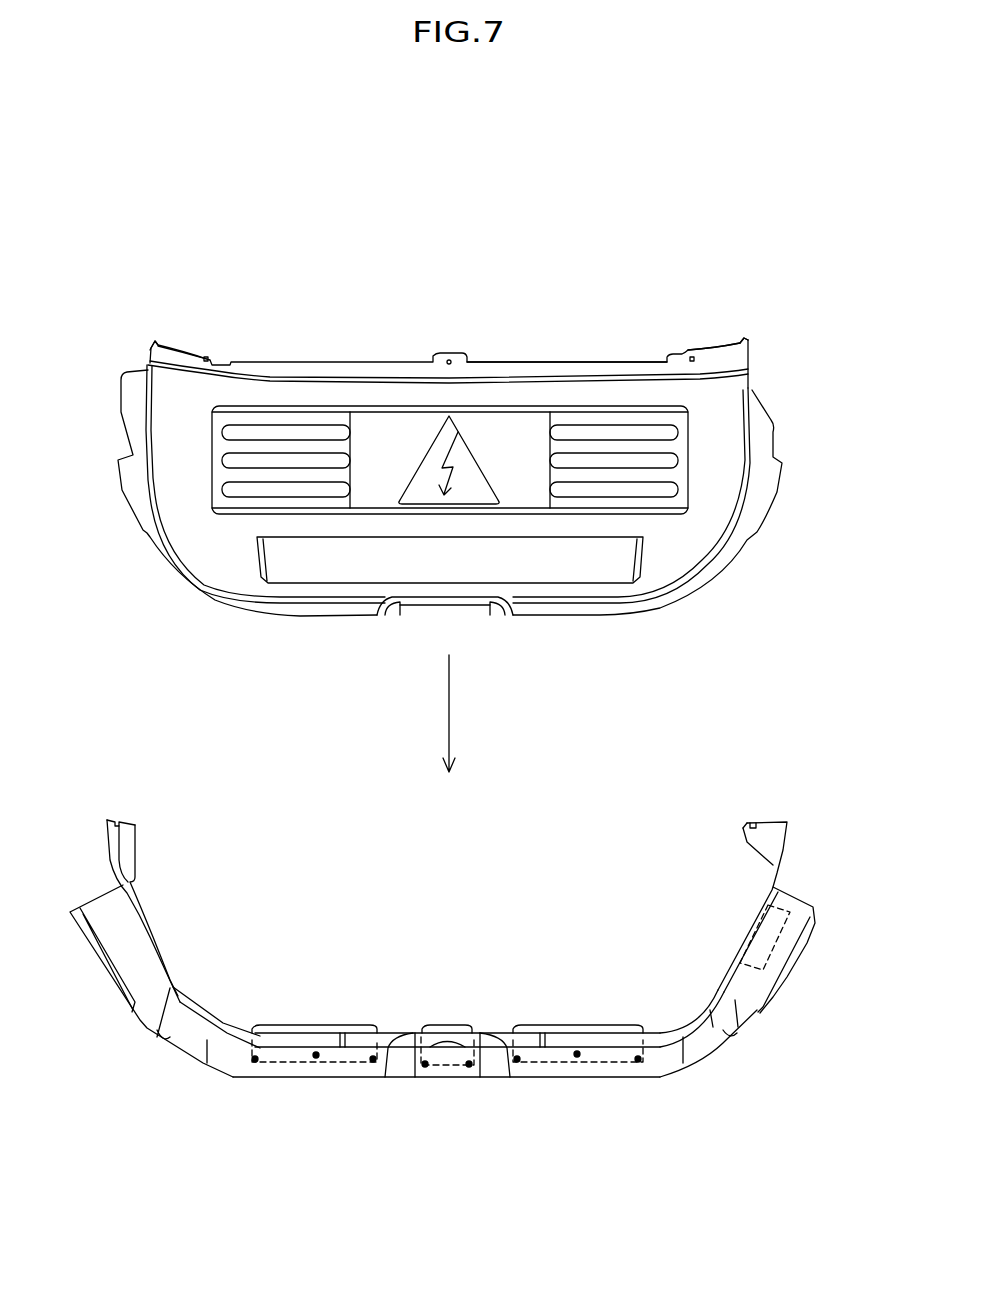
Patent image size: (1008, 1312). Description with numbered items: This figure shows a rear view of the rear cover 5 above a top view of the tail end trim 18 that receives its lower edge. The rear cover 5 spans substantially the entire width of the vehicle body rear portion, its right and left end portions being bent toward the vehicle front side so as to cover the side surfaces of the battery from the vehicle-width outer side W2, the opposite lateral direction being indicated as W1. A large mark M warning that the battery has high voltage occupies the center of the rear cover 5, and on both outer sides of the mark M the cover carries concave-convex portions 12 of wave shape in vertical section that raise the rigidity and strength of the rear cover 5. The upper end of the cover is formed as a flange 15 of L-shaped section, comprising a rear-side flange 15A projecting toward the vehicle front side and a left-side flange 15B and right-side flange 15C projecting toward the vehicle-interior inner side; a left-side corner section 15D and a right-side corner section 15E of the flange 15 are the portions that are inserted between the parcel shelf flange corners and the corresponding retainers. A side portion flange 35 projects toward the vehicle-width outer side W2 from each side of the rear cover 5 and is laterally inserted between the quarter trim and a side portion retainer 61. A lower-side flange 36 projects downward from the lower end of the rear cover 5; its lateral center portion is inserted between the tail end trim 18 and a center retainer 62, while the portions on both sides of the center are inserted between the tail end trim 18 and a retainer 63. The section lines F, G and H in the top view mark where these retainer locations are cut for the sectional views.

The rear cover 5 is at (666, 298).
The concave-convex portions 12 is at (290, 398).
The flange 15 is at (403, 352).
The rear-side flange 15A is at (540, 376).
The left-side flange 15B is at (151, 345).
The right-side flange 15C is at (748, 341).
The left-side corner section 15D is at (184, 327).
The right-side corner section 15E is at (722, 318).
The tail end trim 18 is at (617, 1091).
The side portion flange 35 is at (133, 480).
The lower-side flange 36 is at (568, 608).
The side portion retainer 61 is at (767, 922).
The center retainer 62 is at (465, 1027).
The retainer 63 is at (290, 1027).
The mark M is at (458, 432).
The section line F is at (432, 976).
The section line G is at (562, 976).
The section line H is at (840, 965).
The width direction W1 is at (78, 207).
The vehicle-width outer side W2 is at (90, 178).